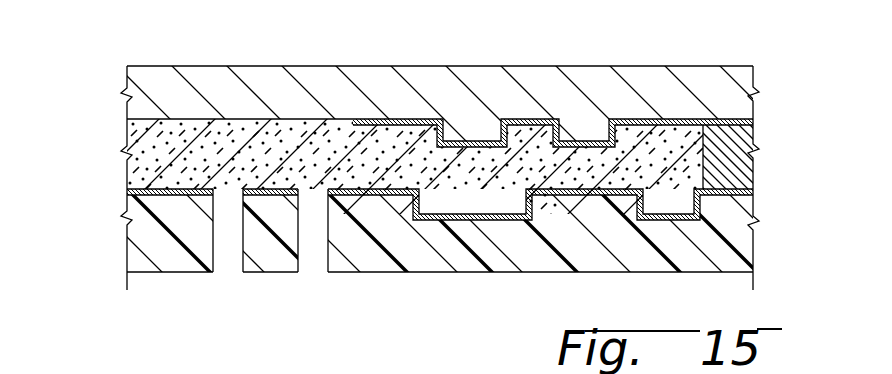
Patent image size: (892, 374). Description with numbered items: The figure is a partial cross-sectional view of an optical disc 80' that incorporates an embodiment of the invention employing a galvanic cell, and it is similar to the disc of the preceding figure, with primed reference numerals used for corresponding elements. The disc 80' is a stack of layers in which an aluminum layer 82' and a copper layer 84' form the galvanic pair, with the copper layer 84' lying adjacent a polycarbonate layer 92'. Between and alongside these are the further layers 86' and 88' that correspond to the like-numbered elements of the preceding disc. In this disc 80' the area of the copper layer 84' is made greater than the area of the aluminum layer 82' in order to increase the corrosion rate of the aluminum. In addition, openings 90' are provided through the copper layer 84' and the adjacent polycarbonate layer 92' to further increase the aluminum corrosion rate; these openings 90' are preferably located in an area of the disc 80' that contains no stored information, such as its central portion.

The optical disc 80' is at (393, 178).
The aluminum layer 82' is at (566, 126).
The copper layer 84' is at (461, 200).
The dielectric layer 86' is at (446, 150).
The conductive via fill 88' is at (755, 185).
The openings 90' is at (268, 264).
The polycarbonate layer 92' is at (442, 175).